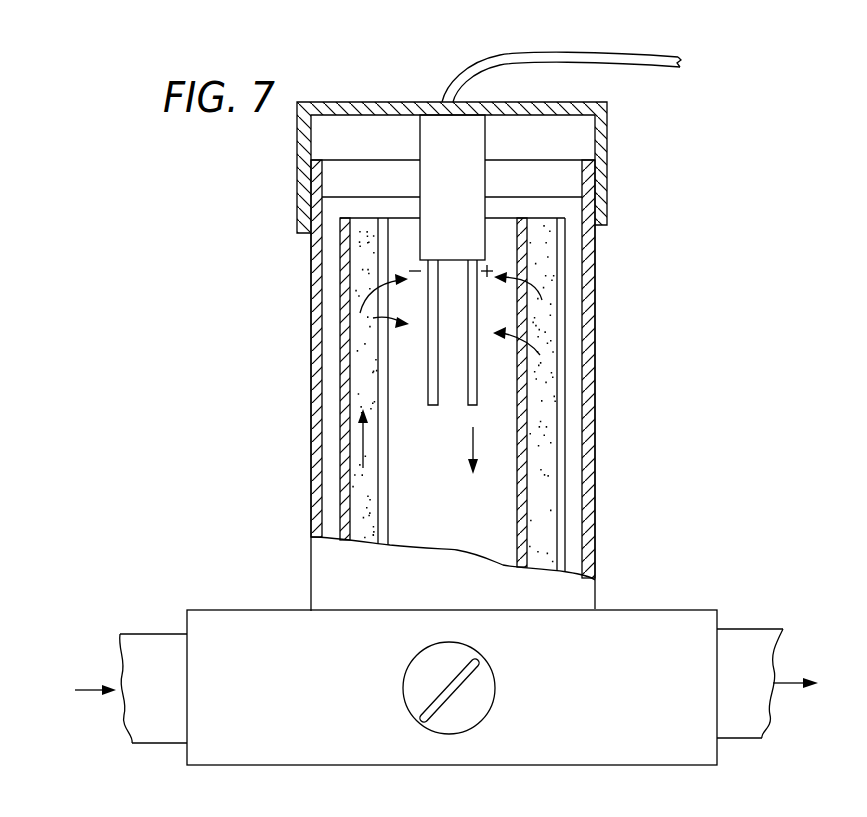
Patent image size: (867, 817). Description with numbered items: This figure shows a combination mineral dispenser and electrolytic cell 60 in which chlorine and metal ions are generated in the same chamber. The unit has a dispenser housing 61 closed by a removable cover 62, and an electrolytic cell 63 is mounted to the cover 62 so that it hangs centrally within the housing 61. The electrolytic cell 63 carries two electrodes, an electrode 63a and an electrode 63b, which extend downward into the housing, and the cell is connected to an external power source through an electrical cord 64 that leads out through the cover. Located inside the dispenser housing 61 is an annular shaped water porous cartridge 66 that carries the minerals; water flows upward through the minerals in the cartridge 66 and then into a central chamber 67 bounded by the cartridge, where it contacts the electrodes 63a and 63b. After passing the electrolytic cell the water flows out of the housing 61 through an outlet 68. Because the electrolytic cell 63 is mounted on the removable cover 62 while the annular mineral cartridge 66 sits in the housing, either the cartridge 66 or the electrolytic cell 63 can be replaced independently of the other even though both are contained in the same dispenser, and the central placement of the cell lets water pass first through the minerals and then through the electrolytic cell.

The combination mineral dispenser and electrolytic cell 60 is at (652, 324).
The dispenser housing 61 is at (595, 420).
The removable cover 62 is at (608, 153).
The electrolytic cell 63 is at (470, 142).
The electrode 63a is at (434, 407).
The electrode 63b is at (467, 407).
The electrical cord 64 is at (620, 67).
The water porous cartridge 66 is at (565, 365).
The central chamber 67 is at (460, 522).
The outlet 68 is at (752, 628).